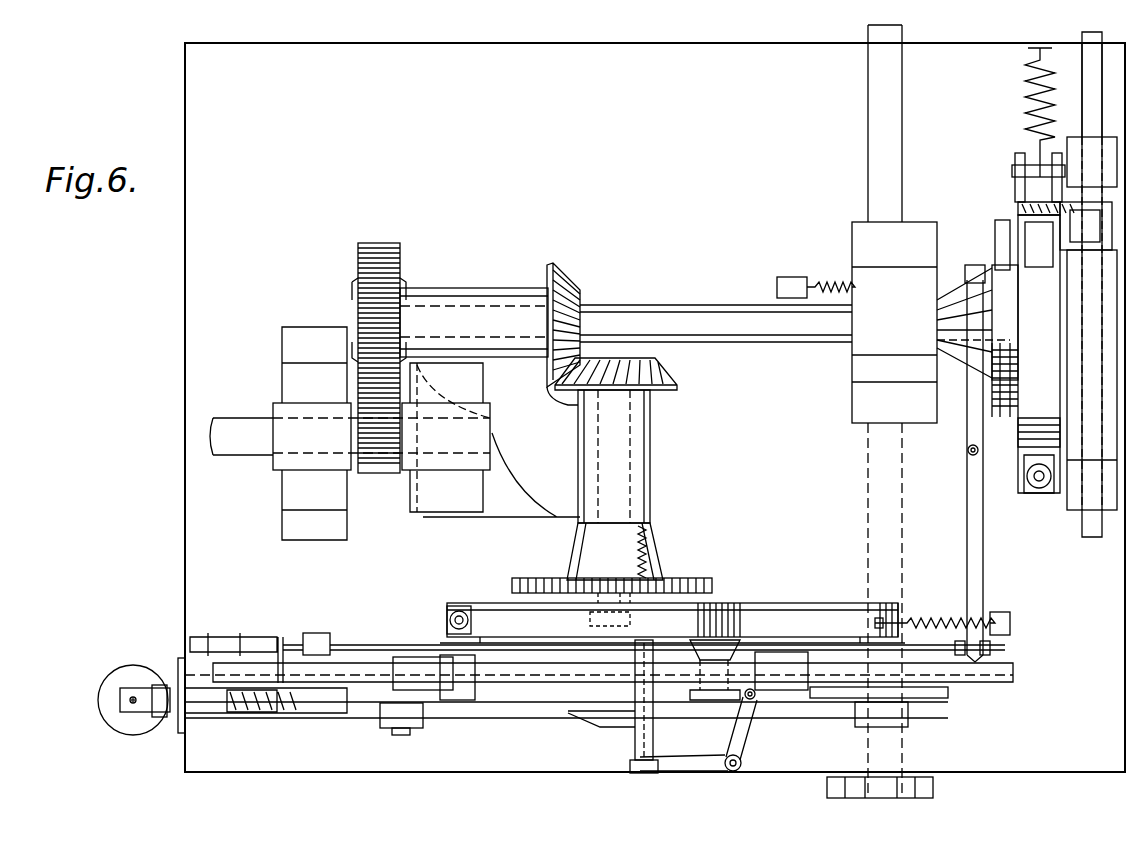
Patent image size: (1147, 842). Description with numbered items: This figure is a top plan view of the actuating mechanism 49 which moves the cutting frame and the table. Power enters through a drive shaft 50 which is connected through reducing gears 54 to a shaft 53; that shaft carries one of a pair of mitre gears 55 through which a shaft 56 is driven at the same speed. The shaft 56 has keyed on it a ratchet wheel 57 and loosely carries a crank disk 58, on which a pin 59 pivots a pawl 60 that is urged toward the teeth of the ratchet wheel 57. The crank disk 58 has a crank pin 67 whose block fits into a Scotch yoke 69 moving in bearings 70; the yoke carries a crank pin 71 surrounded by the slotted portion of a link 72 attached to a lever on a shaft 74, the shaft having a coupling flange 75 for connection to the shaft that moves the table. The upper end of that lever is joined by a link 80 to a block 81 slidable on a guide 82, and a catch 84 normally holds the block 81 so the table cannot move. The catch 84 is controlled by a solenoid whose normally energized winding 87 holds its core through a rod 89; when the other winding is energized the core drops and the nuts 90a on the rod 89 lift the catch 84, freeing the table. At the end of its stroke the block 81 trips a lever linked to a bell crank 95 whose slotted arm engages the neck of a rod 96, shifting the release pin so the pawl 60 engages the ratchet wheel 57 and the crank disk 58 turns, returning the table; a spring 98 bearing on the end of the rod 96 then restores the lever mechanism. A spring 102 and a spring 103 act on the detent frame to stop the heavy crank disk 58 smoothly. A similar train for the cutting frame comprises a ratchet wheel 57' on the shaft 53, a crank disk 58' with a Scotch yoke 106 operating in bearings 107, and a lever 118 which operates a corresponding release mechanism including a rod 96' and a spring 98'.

The actuating mechanism 49 is at (655, 407).
The drive shaft 50 is at (232, 428).
The shaft 53 is at (682, 318).
The reducing gears 54 is at (378, 246).
The mitre gears 55 is at (575, 282).
The shaft 56 is at (660, 446).
The ratchet wheel 57 is at (612, 573).
The crank disk 58 is at (672, 611).
The pin 59 is at (570, 553).
The pawl 60 is at (1000, 393).
The crank pin 67 is at (718, 700).
The Scotch yoke 69 is at (400, 660).
The bearings 70 is at (790, 660).
The crank pin 71 is at (392, 728).
The link 72 is at (572, 716).
The shaft 74 is at (885, 750).
The coupling flange 75 is at (933, 788).
The link 80 is at (520, 706).
The block 81 is at (273, 700).
The guide 82 is at (345, 678).
The catch 84 is at (262, 712).
The winding 87 is at (128, 728).
The rod 89 is at (138, 692).
The nuts 90a is at (132, 695).
The bell crank 95 is at (745, 740).
The rod 96 is at (629, 706).
The spring 98 is at (664, 552).
The spring 102 is at (945, 620).
The spring 103 is at (447, 614).
The Scotch yoke 106 is at (1082, 42).
The bearings 107 is at (1068, 508).
The lever 118 is at (977, 545).
The ratchet wheel 57' is at (1016, 341).
The crank disk 58' is at (1023, 131).
The rod 96' is at (980, 251).
The spring 98' is at (816, 269).